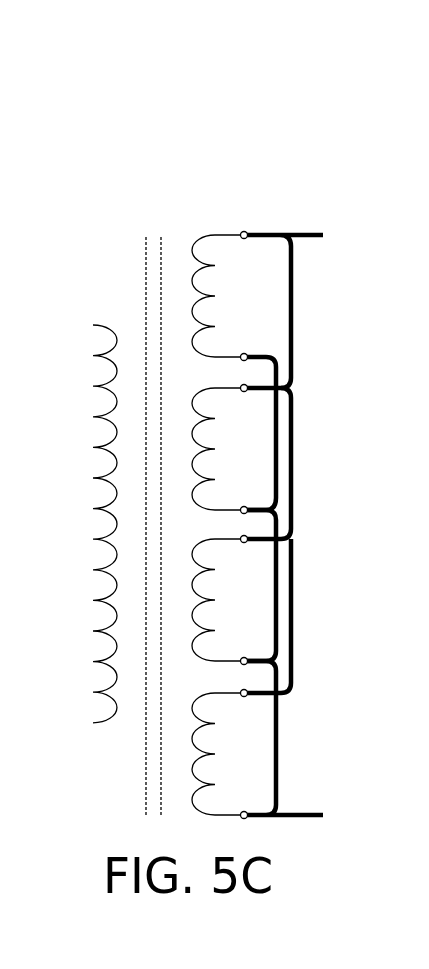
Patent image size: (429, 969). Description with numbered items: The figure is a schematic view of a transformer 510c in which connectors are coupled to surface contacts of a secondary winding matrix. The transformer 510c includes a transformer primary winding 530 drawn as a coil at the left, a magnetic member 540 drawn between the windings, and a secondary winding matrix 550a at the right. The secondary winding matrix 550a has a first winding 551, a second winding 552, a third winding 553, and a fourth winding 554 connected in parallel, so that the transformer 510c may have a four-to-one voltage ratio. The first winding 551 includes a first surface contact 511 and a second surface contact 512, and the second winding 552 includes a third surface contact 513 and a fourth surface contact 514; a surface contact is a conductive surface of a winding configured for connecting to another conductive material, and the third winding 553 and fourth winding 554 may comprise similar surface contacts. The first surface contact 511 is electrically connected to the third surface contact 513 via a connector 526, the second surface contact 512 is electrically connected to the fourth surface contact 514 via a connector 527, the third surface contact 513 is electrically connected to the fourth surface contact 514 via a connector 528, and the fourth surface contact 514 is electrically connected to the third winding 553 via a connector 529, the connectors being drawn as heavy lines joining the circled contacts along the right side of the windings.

The transformer 510c is at (164, 135).
The transformer primary winding 530 is at (122, 205).
The magnetic member 540 is at (183, 205).
The secondary winding matrix 550a is at (338, 205).
The first surface contact 511 is at (247, 233).
The second surface contact 512 is at (246, 353).
The third surface contact 513 is at (247, 392).
The fourth surface contact 514 is at (247, 506).
The connector 526 is at (293, 313).
The connector 527 is at (278, 448).
The connector 528 is at (293, 488).
The connector 529 is at (278, 572).
The first winding 551 is at (207, 295).
The second winding 552 is at (213, 447).
The third winding 553 is at (213, 600).
The fourth winding 554 is at (213, 753).